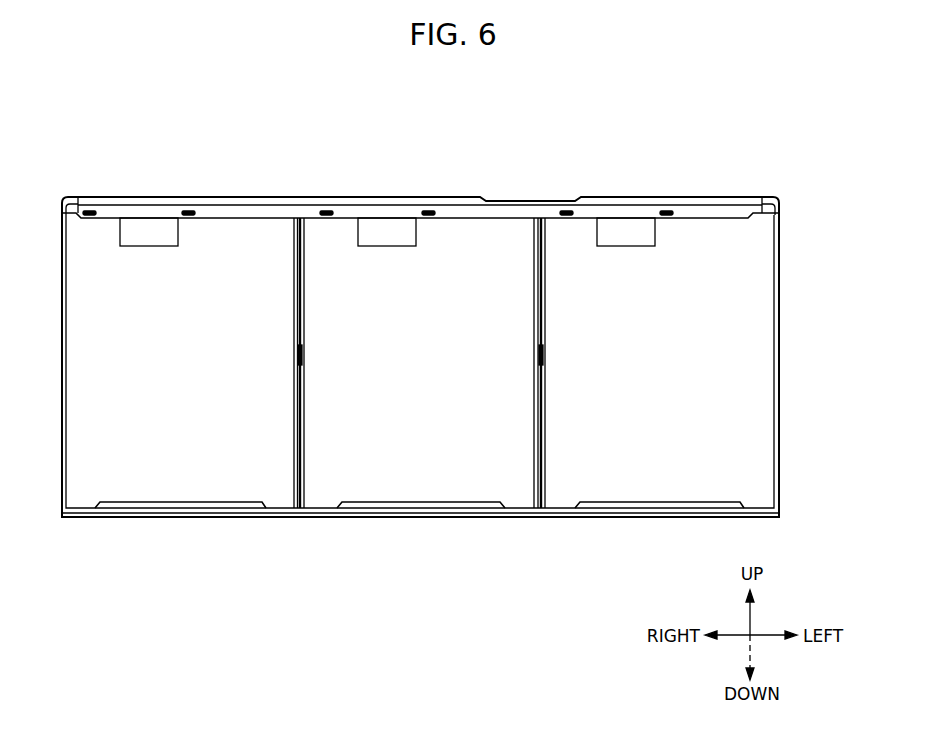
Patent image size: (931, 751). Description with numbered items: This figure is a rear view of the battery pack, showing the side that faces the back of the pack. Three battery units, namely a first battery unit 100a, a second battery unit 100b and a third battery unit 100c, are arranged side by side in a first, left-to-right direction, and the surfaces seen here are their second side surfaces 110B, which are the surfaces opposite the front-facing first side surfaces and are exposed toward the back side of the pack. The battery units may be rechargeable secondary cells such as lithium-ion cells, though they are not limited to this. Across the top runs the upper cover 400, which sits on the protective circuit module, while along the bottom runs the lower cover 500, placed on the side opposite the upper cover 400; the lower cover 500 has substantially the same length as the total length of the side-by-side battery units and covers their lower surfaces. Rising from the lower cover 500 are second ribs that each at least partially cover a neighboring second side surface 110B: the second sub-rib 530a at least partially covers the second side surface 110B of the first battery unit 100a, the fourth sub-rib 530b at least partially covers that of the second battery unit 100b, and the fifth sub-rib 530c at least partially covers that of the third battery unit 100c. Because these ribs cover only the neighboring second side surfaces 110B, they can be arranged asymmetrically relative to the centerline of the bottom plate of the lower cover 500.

The upper cover 400 is at (765, 193).
The lower cover 500 is at (786, 511).
The first battery unit 100a is at (710, 233).
The second battery unit 100b is at (470, 233).
The third battery unit 100c is at (230, 233).
The second side surface 110B is at (207, 373).
The second sub-rib 530a is at (663, 501).
The fourth sub-rib 530b is at (427, 501).
The fifth sub-rib 530c is at (186, 501).